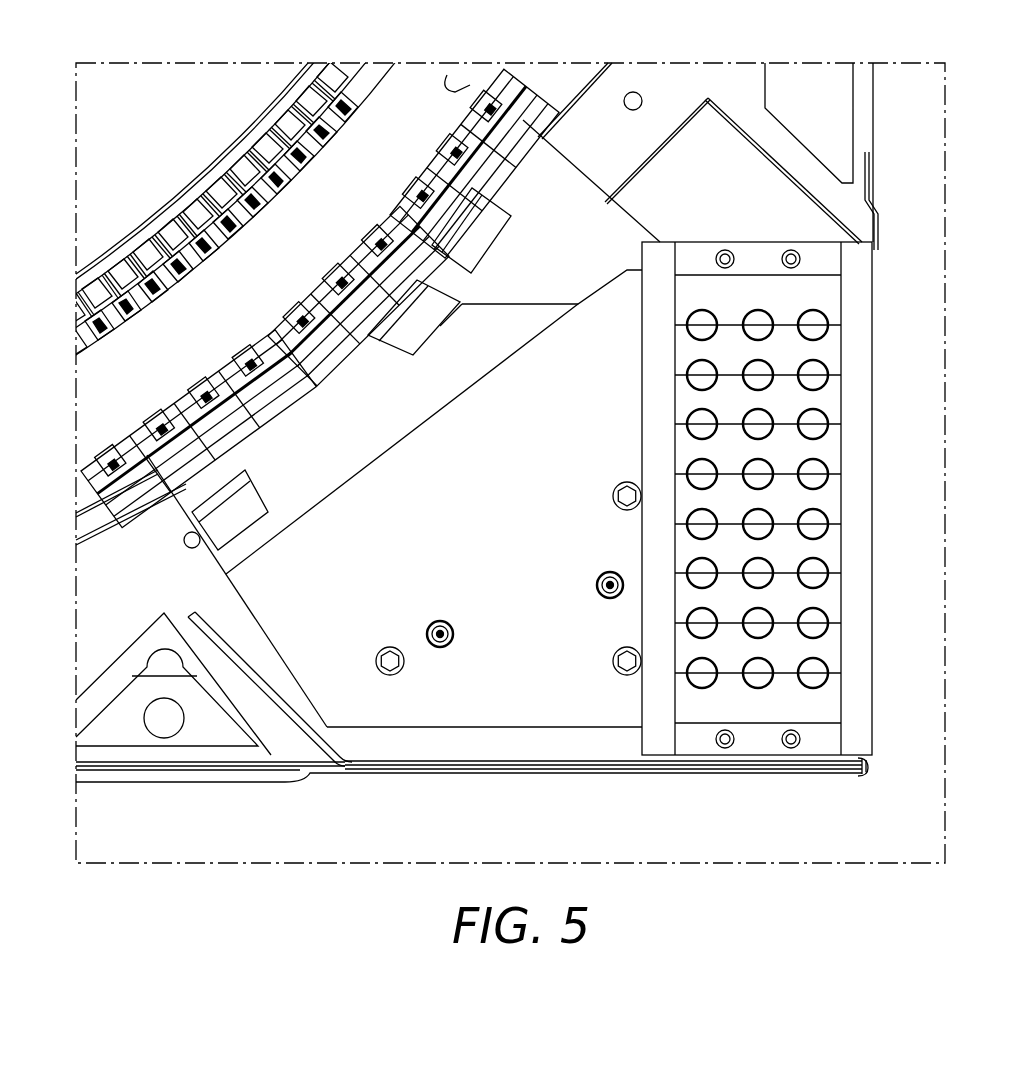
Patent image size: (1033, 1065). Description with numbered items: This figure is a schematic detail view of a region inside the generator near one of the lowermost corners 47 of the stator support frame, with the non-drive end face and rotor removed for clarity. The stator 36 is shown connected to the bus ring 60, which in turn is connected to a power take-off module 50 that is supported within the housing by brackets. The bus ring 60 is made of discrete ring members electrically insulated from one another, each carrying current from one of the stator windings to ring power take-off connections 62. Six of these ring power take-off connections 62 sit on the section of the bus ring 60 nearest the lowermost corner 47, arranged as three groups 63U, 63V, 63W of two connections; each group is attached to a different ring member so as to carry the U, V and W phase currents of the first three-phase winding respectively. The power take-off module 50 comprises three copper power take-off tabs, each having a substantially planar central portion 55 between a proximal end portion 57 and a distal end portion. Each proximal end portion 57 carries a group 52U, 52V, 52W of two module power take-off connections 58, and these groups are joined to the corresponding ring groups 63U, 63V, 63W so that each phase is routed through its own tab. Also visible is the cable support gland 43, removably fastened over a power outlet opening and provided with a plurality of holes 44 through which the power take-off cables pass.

The stator 36 is at (80, 290).
The cable support gland 43 is at (868, 288).
The holes 44 is at (822, 470).
The lowermost corners 47 is at (862, 772).
The power take-off module 50 is at (208, 570).
The group of module power take-off connections 52U is at (244, 462).
The group of module power take-off connections 52V is at (375, 382).
The group of module power take-off connections 52W is at (537, 210).
The central portion 55 is at (633, 222).
The proximal end portion 57 is at (582, 172).
The module power take-off connections 58 is at (137, 478).
The bus ring 60 is at (447, 75).
The ring power take-off connections 62 is at (140, 437).
The first group of ring power take-off connections 63U is at (197, 428).
The second group of ring power take-off connections 63V is at (357, 295).
The third group of ring power take-off connections 63W is at (470, 162).